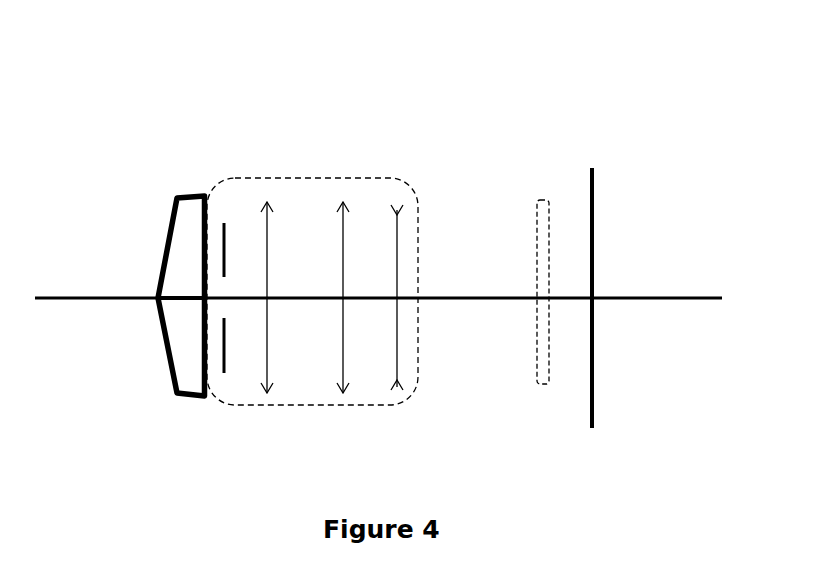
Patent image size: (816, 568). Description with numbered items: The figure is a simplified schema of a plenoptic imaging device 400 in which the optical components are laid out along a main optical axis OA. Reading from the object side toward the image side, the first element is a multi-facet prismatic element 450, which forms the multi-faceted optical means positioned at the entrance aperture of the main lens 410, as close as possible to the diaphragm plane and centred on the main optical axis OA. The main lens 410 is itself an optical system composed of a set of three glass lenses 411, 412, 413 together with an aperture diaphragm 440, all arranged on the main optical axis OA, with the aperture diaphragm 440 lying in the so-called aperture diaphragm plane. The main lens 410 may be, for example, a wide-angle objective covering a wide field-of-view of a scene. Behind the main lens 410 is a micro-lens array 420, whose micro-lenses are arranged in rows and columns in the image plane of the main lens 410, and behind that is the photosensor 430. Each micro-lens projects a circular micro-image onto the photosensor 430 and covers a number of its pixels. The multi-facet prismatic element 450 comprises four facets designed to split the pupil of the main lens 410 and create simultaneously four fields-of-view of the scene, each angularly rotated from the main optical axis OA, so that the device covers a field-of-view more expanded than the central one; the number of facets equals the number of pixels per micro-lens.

The plenoptic imaging device 400 is at (60, 100).
The main optical axis OA is at (668, 300).
The multi-facet prismatic element 450 is at (168, 218).
The aperture diaphragm 440 is at (229, 222).
The main lens 410 is at (308, 187).
The glass lens 411 is at (398, 388).
The glass lens 412 is at (344, 390).
The glass lens 413 is at (268, 390).
The micro-lens array 420 is at (537, 198).
The photosensor 430 is at (590, 178).